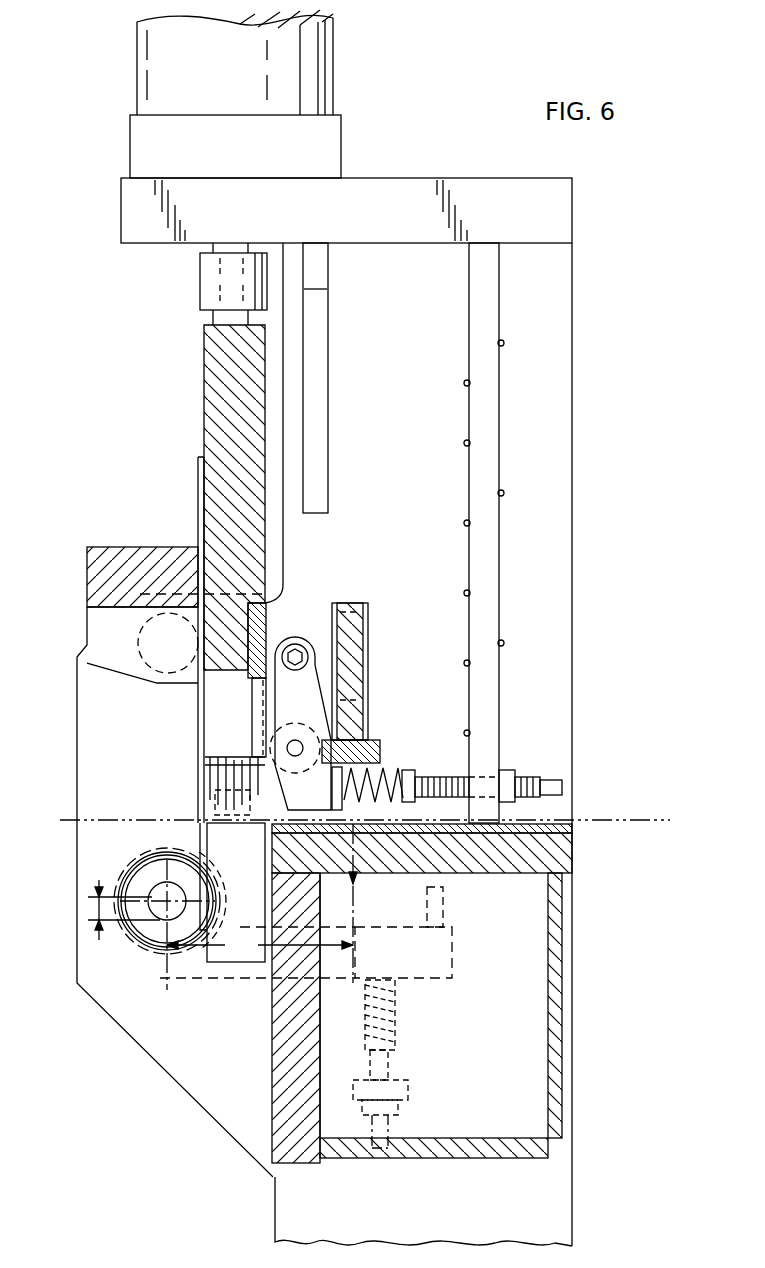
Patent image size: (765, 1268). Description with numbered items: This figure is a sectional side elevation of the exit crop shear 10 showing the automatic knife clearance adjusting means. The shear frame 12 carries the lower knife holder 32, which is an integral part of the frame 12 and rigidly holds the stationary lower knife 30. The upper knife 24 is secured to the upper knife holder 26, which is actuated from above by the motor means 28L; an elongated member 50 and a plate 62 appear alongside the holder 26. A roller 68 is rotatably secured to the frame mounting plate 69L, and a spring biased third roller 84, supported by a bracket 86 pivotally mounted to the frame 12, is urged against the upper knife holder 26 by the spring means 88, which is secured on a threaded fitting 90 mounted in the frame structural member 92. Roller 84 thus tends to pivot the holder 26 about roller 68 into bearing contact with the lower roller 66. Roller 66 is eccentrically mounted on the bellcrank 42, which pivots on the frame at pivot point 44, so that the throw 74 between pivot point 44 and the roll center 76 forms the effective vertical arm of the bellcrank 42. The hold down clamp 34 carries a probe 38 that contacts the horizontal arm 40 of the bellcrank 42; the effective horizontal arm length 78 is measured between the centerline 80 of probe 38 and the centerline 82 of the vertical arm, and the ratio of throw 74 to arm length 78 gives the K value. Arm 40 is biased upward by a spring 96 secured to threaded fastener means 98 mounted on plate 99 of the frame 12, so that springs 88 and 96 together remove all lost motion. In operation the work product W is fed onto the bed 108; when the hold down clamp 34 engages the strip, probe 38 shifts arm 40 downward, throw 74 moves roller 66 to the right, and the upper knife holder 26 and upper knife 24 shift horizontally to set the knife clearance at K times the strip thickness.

The exit crop shear 10 is at (625, 278).
The frame 12 is at (553, 288).
The motor means 28L is at (143, 78).
The rod 50 is at (402, 400).
The frame structural member 92 is at (488, 724).
The upper knife holder 26 is at (226, 414).
The plate 62 is at (200, 478).
The frame mounting plate 69L is at (115, 633).
The roller 68 is at (160, 668).
The upper knife 24 is at (275, 627).
The bracket 86 is at (324, 632).
The hold down clamp 34 is at (370, 742).
The spring means 88 is at (385, 770).
The threaded fitting 90 is at (425, 778).
The work product W is at (648, 822).
The bed 108 is at (550, 826).
The probe 38 is at (372, 852).
The third roller 84 is at (277, 779).
The lower knife 30 is at (265, 870).
The roller 66 is at (143, 889).
The roll center 76 is at (160, 890).
The pivot point 44 is at (160, 925).
The throw 74 is at (100, 935).
The centerline of vertical arm 82 is at (167, 988).
The effective horizontal arm length 78 is at (260, 945).
The bellcrank 42 is at (233, 975).
The centerline of probe 80 is at (355, 922).
The horizontal arm 40 is at (440, 972).
The spring 96 is at (370, 982).
The threaded fastener means 98 is at (395, 1075).
The plate 99 is at (405, 1097).
The lower knife holder 32 is at (290, 1100).